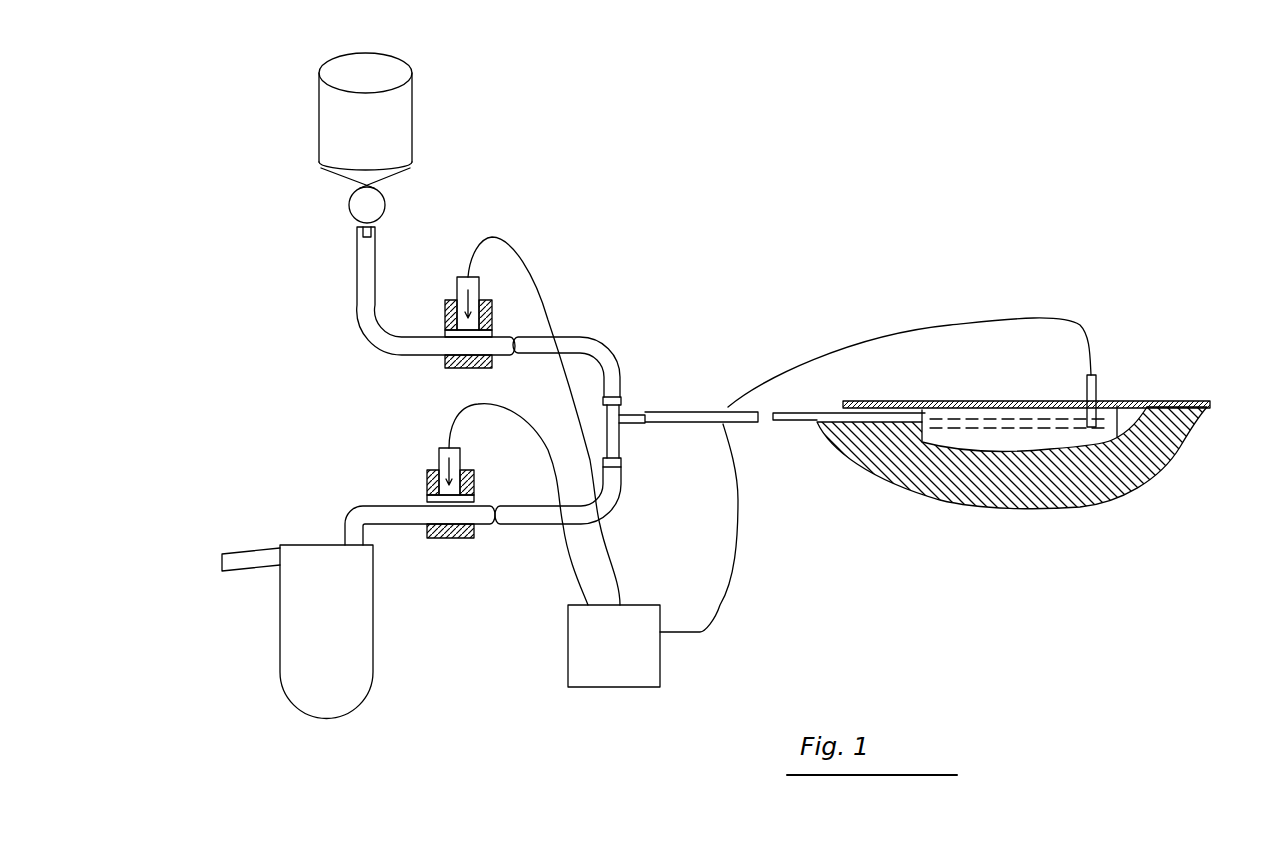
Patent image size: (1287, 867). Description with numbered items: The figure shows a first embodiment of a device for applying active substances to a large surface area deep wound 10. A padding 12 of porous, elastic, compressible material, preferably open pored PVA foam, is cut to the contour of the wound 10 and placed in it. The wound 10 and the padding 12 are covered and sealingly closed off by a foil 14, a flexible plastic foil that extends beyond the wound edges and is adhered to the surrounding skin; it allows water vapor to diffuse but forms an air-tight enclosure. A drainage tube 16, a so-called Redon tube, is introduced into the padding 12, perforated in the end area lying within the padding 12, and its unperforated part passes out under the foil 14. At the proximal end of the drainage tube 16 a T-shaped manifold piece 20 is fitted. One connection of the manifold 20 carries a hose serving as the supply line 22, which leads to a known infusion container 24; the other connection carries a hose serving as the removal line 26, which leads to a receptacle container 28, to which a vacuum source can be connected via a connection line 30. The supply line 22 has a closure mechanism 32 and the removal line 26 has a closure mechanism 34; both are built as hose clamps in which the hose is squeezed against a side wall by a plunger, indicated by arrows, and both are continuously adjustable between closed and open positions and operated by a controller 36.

The wound 10 is at (1090, 447).
The padding 12 is at (1010, 443).
The foil 14 is at (943, 402).
The drainage tube 16 is at (913, 488).
The manifold piece 20 is at (617, 420).
The supply line 22 is at (363, 285).
The infusion container 24 is at (405, 120).
The removal line 26 is at (528, 528).
The receptacle container 28 is at (293, 628).
The connection line 30 is at (250, 555).
The closure mechanism 32 is at (447, 302).
The closure mechanism 34 is at (427, 488).
The controller 36 is at (653, 670).